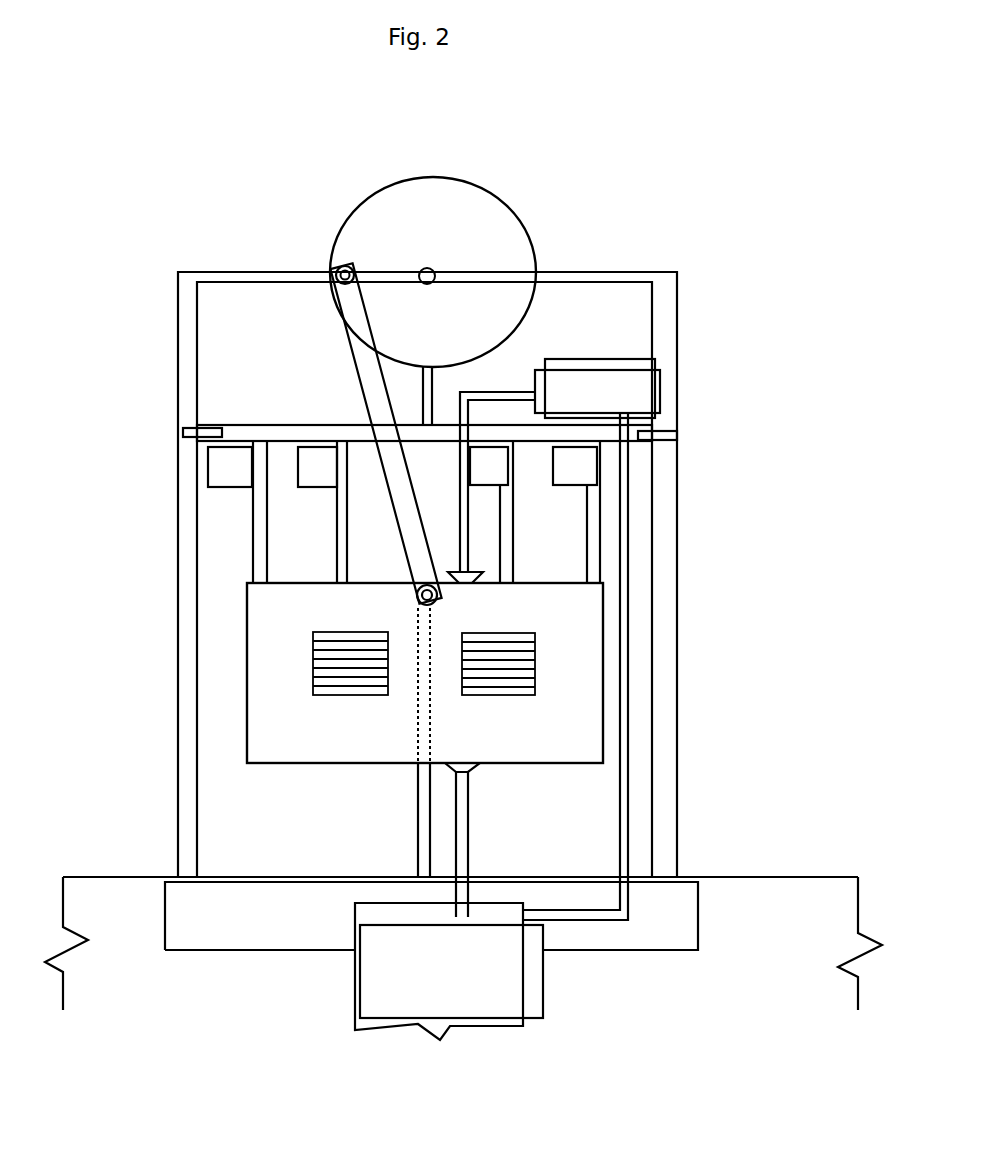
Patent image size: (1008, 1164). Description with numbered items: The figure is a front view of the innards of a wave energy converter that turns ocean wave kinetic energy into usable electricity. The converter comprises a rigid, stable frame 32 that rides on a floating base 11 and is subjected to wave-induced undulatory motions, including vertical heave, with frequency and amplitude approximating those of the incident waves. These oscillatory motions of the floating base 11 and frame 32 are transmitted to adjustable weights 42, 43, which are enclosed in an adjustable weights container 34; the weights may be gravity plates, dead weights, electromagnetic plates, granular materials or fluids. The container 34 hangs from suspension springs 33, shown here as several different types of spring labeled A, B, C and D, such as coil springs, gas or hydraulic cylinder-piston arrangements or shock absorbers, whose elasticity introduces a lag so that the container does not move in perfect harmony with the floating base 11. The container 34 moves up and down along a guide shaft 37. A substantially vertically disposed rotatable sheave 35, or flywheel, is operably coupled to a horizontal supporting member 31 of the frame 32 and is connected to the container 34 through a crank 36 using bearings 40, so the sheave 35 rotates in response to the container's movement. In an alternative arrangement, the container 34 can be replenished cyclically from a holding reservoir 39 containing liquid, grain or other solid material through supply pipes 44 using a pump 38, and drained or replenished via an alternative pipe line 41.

The floating base 11 is at (133, 877).
The horizontal supporting member 31 is at (235, 277).
The frame 32 is at (188, 338).
The suspension springs 33 is at (260, 528).
The adjustable weights container 34 is at (277, 657).
The rotatable sheave 35 is at (457, 192).
The crank 36 is at (358, 327).
The guide shaft 37 is at (428, 792).
The pump 38 is at (607, 397).
The holding reservoir 39 is at (458, 975).
The bearings 40 is at (335, 262).
The alternative pipe line 41 is at (460, 797).
The adjustable weight 42 is at (360, 678).
The adjustable weight 43 is at (498, 683).
The supply pipes 44 is at (497, 392).